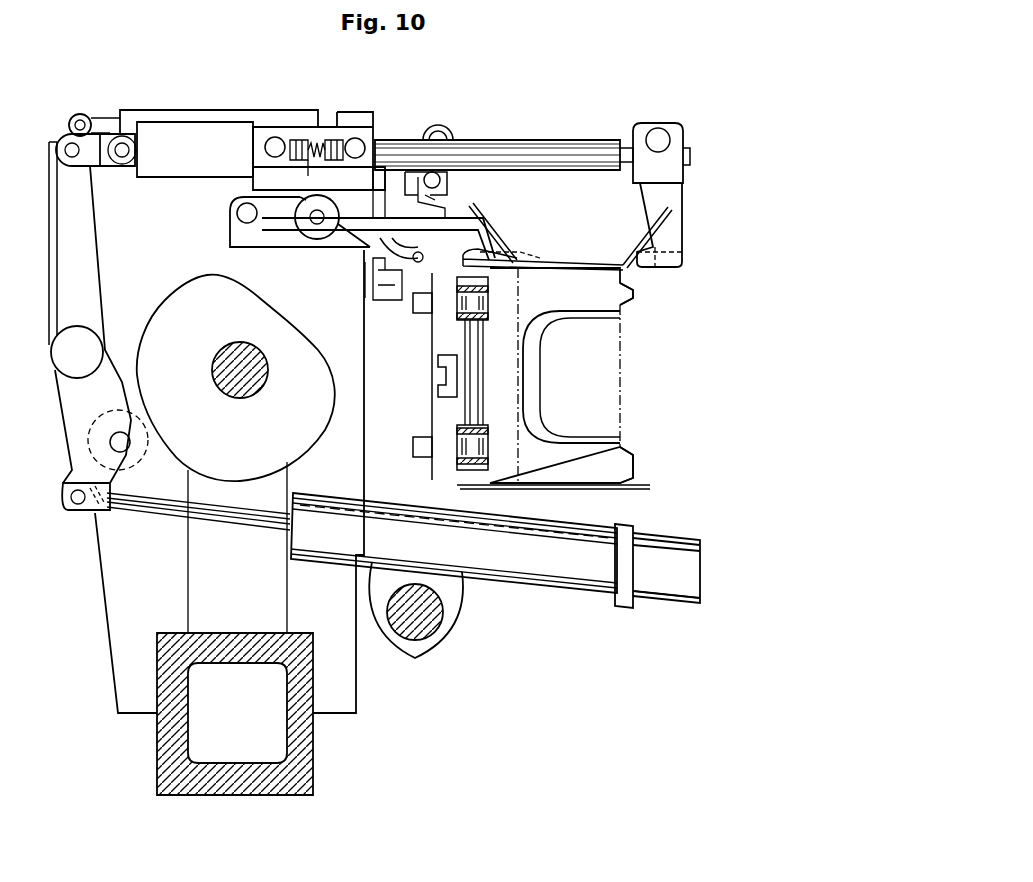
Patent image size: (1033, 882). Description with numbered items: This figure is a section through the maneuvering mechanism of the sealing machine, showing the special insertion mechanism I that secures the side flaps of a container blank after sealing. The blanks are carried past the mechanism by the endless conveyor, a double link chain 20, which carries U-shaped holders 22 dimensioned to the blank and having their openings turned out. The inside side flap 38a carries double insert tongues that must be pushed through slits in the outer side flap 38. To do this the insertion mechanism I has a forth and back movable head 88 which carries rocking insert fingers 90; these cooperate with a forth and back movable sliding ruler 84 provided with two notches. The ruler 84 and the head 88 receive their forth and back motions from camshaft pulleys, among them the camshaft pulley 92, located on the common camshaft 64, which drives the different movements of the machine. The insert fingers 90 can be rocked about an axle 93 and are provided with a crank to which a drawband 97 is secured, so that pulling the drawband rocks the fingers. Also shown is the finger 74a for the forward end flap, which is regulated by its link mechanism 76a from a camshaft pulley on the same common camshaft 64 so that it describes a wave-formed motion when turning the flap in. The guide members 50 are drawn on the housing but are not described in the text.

The double link chain 20 is at (457, 317).
The holder 22 is at (593, 315).
The outer side flap 38 is at (650, 237).
The inside side flap 38a is at (473, 203).
The guide lug 50 is at (633, 295).
The common camshaft 64 is at (268, 360).
The finger 74a is at (570, 265).
The link mechanism 76a is at (356, 117).
The sliding ruler 84 is at (670, 270).
The movable head 88 is at (453, 175).
The insert fingers 90 is at (450, 205).
The camshaft pulley 92 is at (167, 298).
The axle 93 is at (428, 171).
The drawband 97 is at (373, 263).
The insertion mechanism I is at (440, 138).